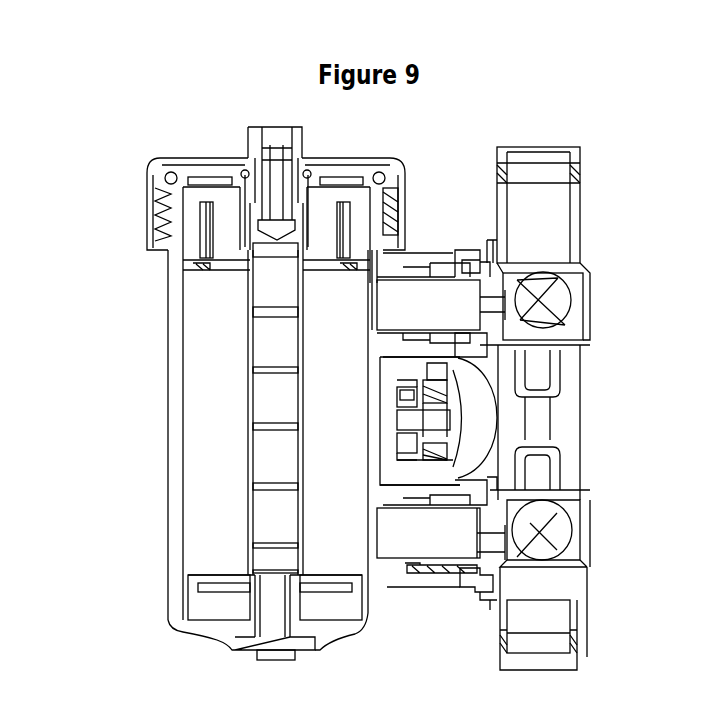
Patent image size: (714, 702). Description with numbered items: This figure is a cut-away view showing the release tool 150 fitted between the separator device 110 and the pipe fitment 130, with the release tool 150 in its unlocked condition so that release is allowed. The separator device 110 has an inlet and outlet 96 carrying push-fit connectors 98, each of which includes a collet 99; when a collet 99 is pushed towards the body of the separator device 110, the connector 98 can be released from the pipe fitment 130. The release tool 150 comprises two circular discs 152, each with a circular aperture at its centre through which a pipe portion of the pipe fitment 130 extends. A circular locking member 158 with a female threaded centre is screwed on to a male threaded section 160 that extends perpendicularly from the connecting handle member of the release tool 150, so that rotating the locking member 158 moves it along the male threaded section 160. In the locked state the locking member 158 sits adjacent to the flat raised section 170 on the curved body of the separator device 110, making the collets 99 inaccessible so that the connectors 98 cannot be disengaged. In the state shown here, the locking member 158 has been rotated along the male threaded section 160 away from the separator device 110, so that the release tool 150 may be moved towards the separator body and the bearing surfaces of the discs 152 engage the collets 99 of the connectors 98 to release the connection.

The inlet and outlet 96 is at (391, 302).
The connector 98 is at (480, 238).
The collet 99 is at (458, 574).
The separator device 110 is at (161, 410).
The pipe fitment 130 is at (560, 396).
The release tool 150 is at (438, 472).
The circular disc 152 is at (474, 595).
The circular locking member 158 is at (408, 400).
The male threaded section 160 is at (424, 417).
The flat raised section 170 is at (378, 447).